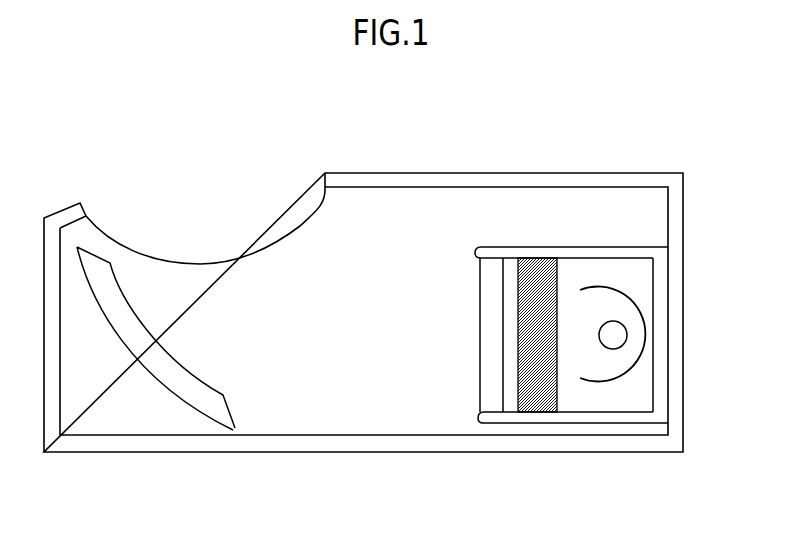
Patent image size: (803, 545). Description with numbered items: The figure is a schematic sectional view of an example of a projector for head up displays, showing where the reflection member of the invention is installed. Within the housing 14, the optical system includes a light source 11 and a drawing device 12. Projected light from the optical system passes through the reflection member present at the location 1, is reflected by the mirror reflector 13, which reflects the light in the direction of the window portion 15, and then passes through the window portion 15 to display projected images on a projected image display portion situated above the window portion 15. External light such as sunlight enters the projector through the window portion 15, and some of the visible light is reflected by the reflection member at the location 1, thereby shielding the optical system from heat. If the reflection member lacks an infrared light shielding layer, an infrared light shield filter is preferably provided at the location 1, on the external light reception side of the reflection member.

The location of reflection member 1 is at (488, 388).
The light source 11 is at (607, 360).
The drawing device 12 is at (540, 395).
The mirror reflector 13 is at (205, 403).
The housing 14 is at (683, 203).
The window portion 15 is at (303, 228).